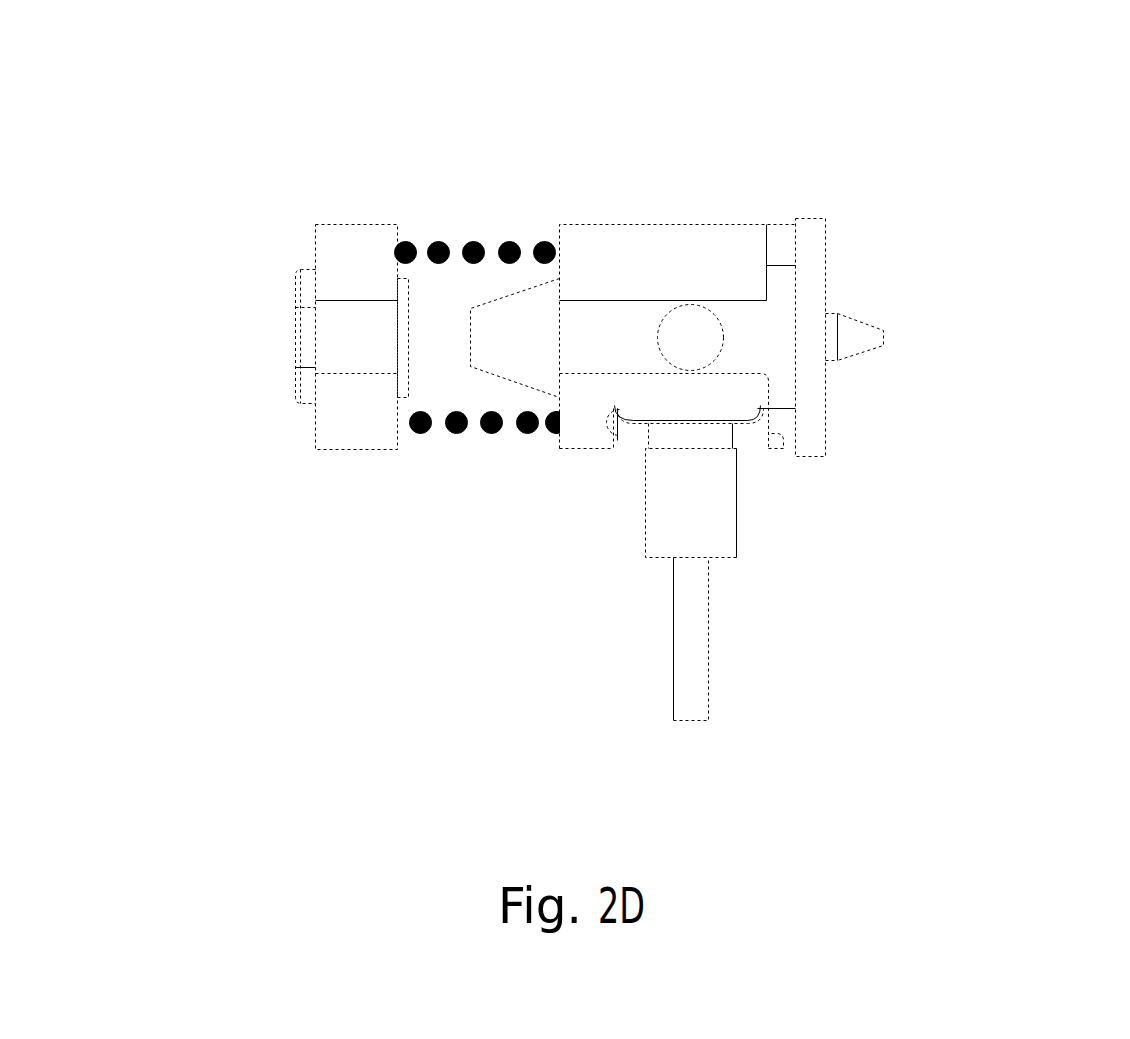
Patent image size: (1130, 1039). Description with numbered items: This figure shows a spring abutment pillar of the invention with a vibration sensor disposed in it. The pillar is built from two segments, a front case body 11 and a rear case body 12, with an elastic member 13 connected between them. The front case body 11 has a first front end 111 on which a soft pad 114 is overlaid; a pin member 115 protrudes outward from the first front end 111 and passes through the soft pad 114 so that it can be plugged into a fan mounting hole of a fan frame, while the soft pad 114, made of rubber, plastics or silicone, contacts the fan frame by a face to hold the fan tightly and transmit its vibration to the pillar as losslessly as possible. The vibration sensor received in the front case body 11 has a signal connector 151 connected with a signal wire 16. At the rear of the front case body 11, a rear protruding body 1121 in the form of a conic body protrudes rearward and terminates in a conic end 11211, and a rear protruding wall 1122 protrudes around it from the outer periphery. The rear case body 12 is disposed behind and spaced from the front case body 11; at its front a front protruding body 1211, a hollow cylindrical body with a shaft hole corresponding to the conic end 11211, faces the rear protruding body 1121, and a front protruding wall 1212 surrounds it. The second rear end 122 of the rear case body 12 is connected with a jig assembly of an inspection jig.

The front case body 11 is at (680, 170).
The first front end 111 is at (797, 245).
The soft pad 114 is at (810, 285).
The pin member 115 is at (860, 335).
The rear protruding body 1121 is at (520, 363).
The rear protruding wall 1122 is at (559, 238).
The conic end 11211 is at (470, 340).
The rear case body 12 is at (322, 210).
The second rear end 122 is at (315, 250).
The front protruding body 1211 is at (402, 380).
The front protruding wall 1212 is at (397, 268).
The elastic member 13 is at (527, 432).
The signal connector 151 is at (723, 433).
The signal wire 16 is at (705, 537).